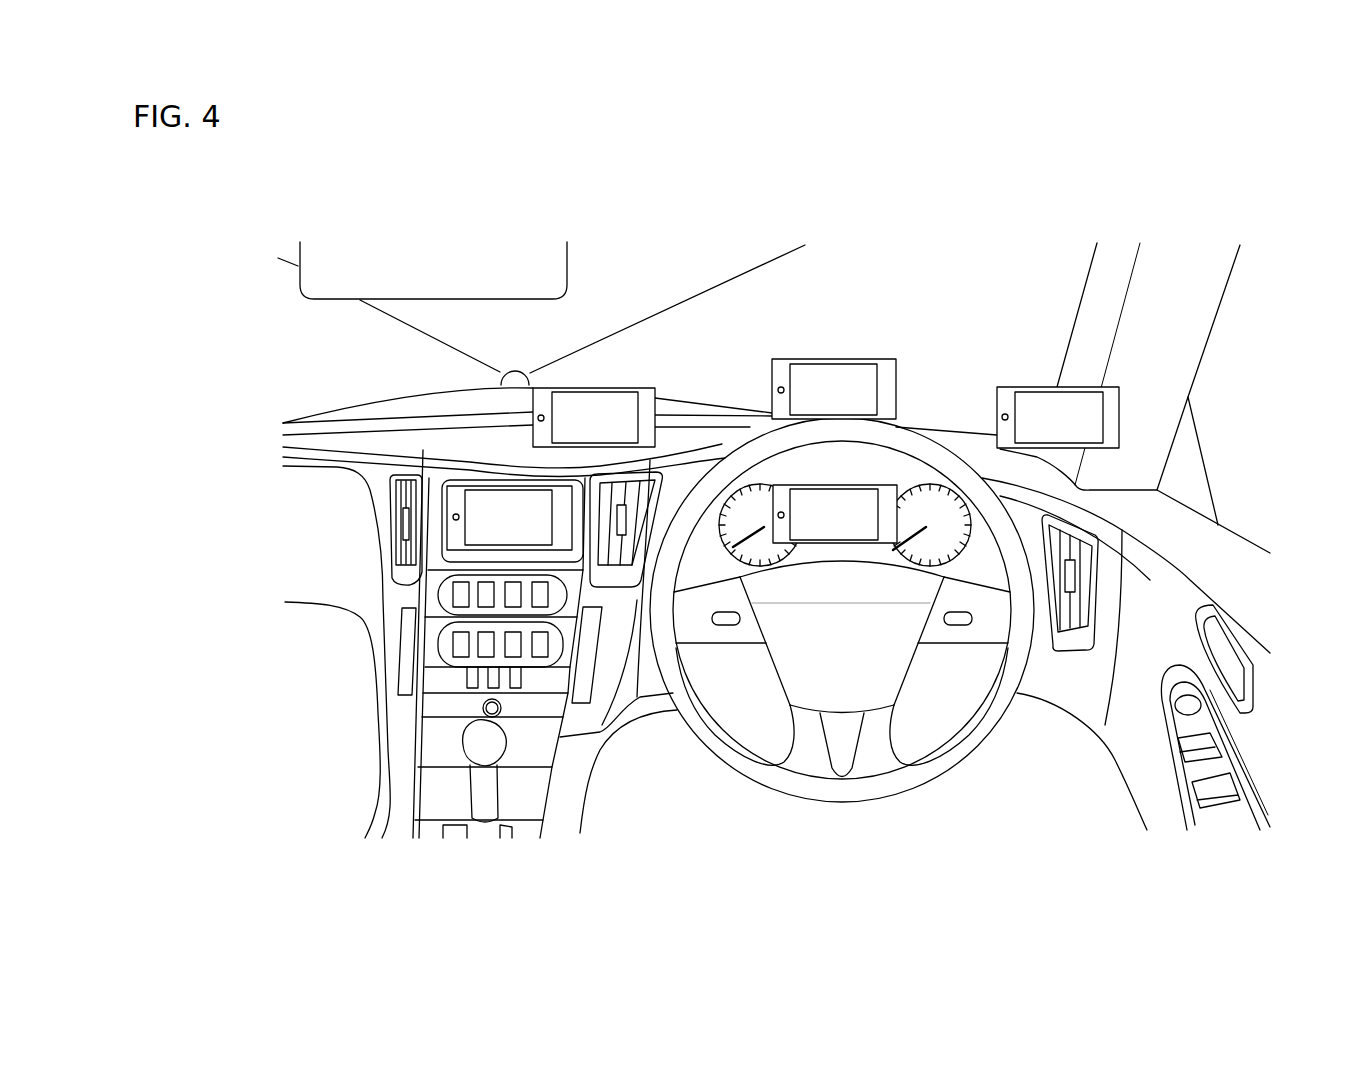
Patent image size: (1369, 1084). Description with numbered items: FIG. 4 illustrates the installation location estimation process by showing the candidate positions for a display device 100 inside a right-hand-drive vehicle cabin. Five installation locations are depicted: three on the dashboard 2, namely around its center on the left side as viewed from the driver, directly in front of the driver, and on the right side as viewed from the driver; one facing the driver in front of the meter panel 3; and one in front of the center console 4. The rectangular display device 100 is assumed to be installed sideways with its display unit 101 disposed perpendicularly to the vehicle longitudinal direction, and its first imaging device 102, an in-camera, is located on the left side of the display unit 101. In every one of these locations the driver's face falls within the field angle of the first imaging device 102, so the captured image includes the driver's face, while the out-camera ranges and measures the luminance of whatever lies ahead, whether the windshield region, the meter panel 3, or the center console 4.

The dashboard 2 is at (680, 440).
The meter panel 3 is at (730, 540).
The center console 4 is at (467, 483).
The display device 100 is at (622, 388).
The display unit 101 is at (455, 537).
The first imaging device 102 is at (455, 517).